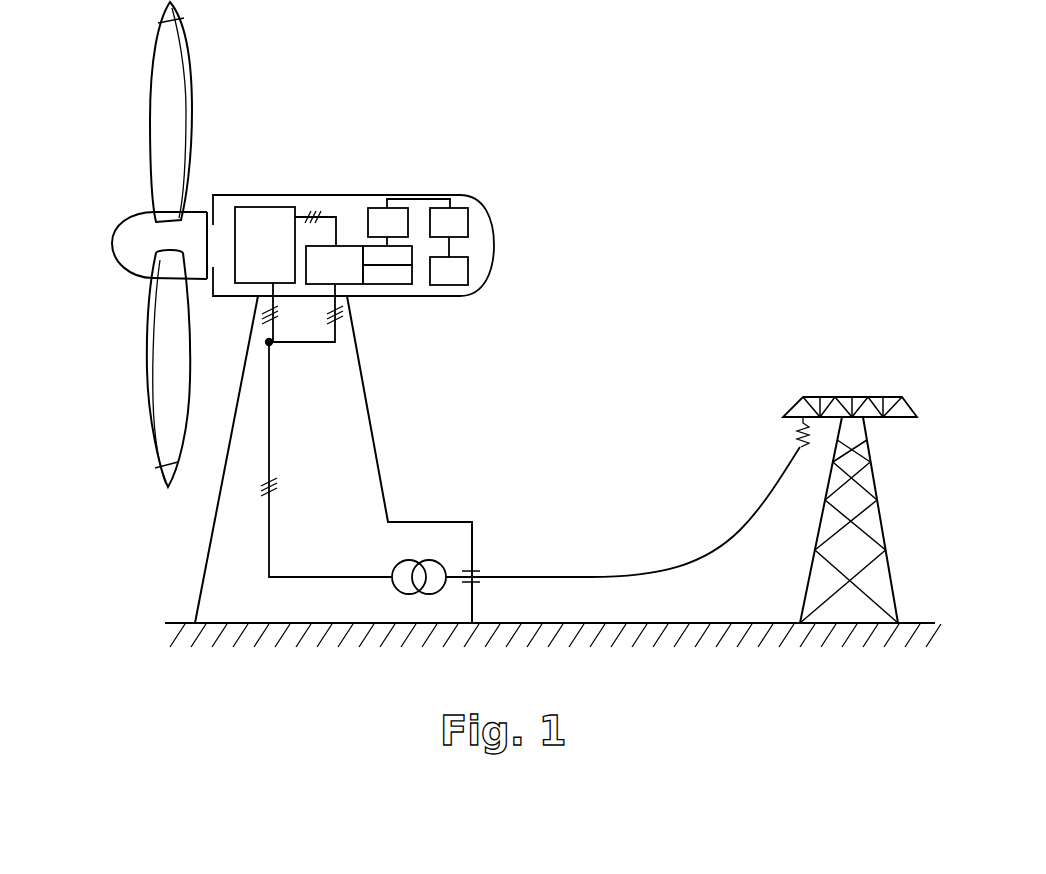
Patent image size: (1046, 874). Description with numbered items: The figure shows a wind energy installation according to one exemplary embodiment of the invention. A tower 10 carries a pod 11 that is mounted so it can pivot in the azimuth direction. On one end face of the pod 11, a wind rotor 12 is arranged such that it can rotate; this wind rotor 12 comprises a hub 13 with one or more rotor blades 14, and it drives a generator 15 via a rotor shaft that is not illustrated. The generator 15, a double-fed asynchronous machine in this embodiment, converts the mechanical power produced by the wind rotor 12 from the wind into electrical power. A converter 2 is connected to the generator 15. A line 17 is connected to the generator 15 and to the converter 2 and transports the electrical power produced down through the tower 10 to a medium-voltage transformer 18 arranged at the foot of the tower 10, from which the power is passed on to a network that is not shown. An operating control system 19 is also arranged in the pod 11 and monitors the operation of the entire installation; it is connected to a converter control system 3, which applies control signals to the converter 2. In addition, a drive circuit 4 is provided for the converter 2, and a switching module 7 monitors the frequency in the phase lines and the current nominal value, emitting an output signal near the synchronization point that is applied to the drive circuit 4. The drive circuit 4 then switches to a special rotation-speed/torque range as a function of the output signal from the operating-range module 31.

The converter 2 is at (350, 246).
The converter control system 3 is at (390, 276).
The drive circuit 4 is at (382, 207).
The switching module 7 is at (468, 221).
The tower 10 is at (367, 388).
The pod 11 is at (245, 195).
The wind rotor 12 is at (128, 244).
The hub 13 is at (143, 250).
The rotor blades 14 is at (170, 102).
The generator 15 is at (268, 207).
The line 17 is at (272, 388).
The medium-voltage transformer 18 is at (398, 558).
The operating control system 19 is at (468, 273).
The operating-range module 31 is at (405, 256).